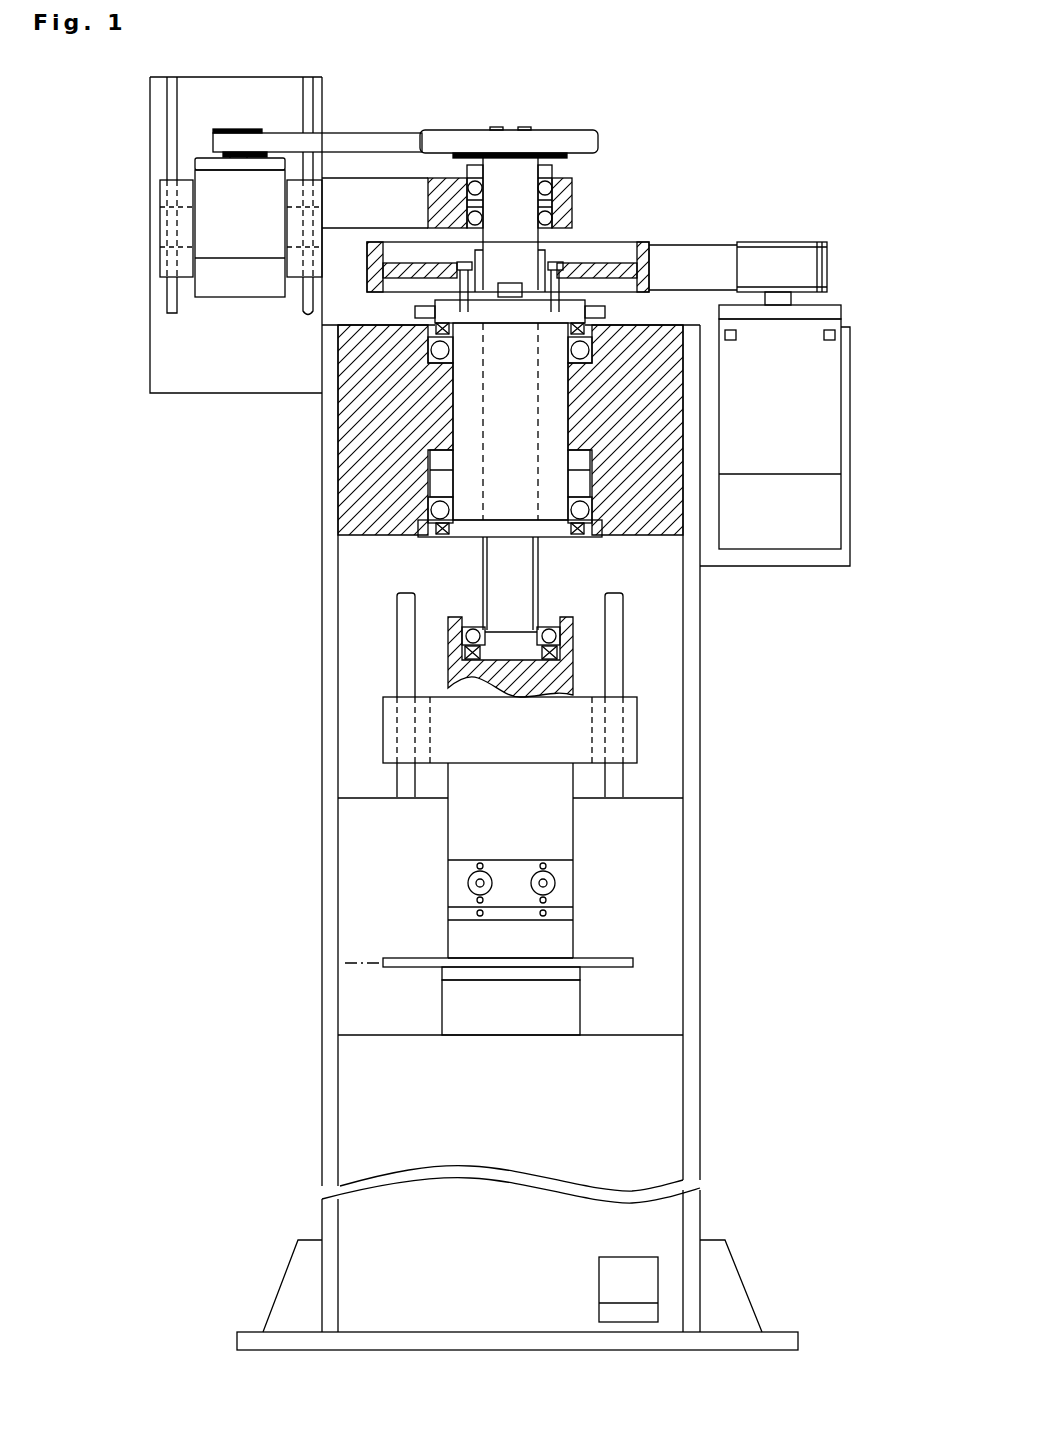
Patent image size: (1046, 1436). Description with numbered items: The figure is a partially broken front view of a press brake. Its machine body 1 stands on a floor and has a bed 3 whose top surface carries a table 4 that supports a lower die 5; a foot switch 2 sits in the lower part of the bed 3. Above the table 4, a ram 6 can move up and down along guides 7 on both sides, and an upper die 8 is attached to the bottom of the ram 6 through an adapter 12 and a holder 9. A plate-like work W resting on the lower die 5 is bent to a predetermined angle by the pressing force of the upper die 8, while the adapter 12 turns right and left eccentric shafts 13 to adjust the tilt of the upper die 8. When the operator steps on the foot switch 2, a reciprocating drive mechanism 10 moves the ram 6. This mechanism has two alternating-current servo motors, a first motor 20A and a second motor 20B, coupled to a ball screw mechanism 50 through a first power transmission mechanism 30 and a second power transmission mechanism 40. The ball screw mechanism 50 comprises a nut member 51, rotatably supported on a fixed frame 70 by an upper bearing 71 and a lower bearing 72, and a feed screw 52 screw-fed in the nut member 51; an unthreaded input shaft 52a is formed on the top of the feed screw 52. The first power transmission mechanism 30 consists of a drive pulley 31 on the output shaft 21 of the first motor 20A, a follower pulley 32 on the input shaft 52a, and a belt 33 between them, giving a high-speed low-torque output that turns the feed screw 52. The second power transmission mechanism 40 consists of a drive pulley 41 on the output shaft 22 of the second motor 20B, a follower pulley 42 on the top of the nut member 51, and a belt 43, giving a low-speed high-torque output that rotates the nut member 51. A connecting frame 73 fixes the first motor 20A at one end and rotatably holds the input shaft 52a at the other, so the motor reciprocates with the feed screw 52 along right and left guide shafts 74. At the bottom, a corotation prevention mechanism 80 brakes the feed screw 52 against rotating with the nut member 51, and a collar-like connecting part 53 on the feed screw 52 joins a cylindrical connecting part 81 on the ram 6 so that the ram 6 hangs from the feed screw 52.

The machine body 1 is at (526, 837).
The foot switch 2 is at (650, 1280).
The bed 3 is at (662, 1063).
The table 4 is at (565, 1000).
The lower die 5 is at (565, 973).
The ram 6 is at (520, 860).
The guides 7 is at (400, 648).
The upper die 8 is at (565, 938).
The holder 9 is at (565, 912).
The reciprocating drive mechanism 10 is at (511, 191).
The adapter 12 is at (565, 890).
The eccentric shafts 13 is at (560, 880).
The first motor 20A is at (197, 246).
The second motor 20B is at (803, 453).
The output shaft 21 is at (230, 156).
The output shaft 22 is at (791, 298).
The first power transmission mechanism 30 is at (405, 94).
The drive pulley 31 is at (248, 129).
The follower pulley 32 is at (558, 127).
The belt 33 is at (408, 137).
The second power transmission mechanism 40 is at (613, 232).
The drive pulley 41 is at (800, 245).
The follower pulley 42 is at (640, 242).
The belt 43 is at (720, 252).
The ball screw mechanism 50 is at (344, 465).
The nut member 51 is at (460, 425).
The feed screw 52 is at (485, 563).
The input shaft 52a is at (527, 160).
The connecting part 53 is at (500, 638).
The fixed frame 70 is at (469, 430).
The upper bearing 71 is at (437, 352).
The lower bearing 72 is at (438, 511).
The connecting frame 73 is at (365, 195).
The guide shafts 74 is at (170, 303).
The corotation prevention mechanism 80 is at (520, 755).
The connecting part 81 is at (565, 677).
The work W is at (345, 963).